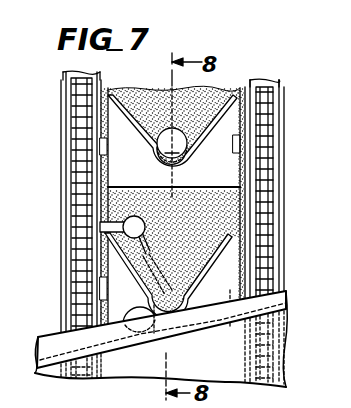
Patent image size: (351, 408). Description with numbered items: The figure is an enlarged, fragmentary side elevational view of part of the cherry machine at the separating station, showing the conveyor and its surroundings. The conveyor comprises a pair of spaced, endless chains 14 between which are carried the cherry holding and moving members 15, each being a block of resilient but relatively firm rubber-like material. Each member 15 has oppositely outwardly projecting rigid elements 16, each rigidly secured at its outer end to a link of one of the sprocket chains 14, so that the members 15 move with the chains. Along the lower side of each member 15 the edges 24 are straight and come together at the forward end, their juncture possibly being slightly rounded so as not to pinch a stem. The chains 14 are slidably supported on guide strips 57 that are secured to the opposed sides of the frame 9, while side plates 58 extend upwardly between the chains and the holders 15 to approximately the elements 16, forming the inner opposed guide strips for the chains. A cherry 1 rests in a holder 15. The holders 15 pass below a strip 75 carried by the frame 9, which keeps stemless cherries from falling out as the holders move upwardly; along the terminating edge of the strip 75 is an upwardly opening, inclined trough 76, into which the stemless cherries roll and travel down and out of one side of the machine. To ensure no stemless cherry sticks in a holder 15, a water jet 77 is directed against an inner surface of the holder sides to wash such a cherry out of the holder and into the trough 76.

The cherry 1 is at (140, 308).
The frame 9 is at (287, 133).
The endless chains 14 is at (72, 123).
The cherry holding and moving members 15 is at (223, 173).
The rigid elements 16 is at (100, 164).
The edges 24 is at (146, 136).
The guide strips 57 is at (77, 78).
The side plates 58 is at (238, 88).
The strip 75 is at (216, 361).
The inclined trough 76 is at (283, 290).
The water jet 77 is at (110, 206).